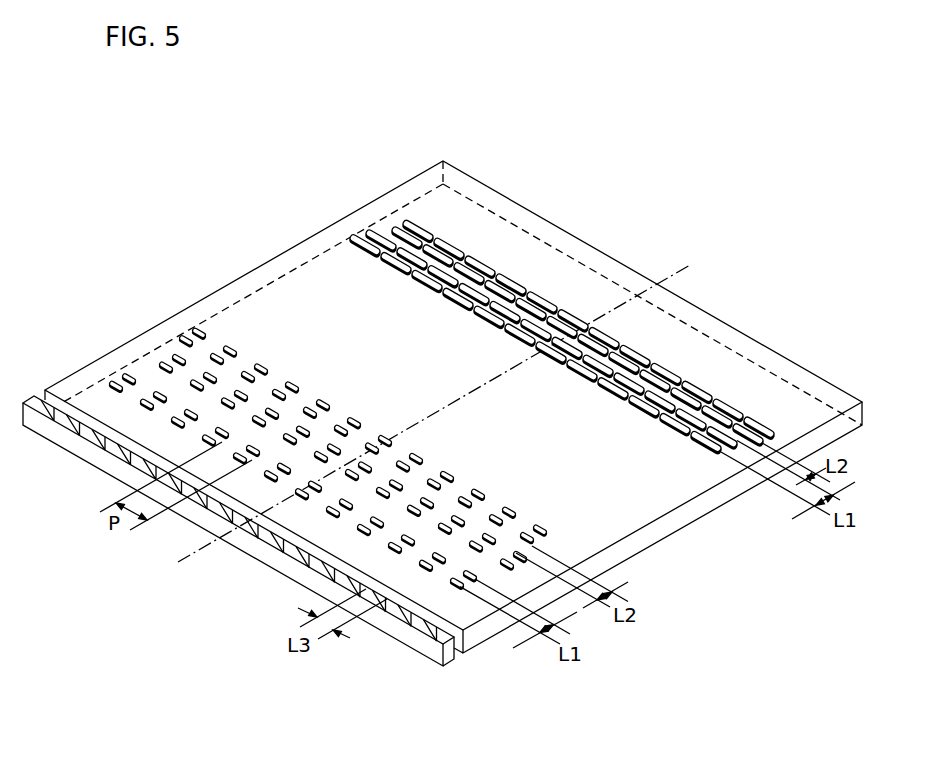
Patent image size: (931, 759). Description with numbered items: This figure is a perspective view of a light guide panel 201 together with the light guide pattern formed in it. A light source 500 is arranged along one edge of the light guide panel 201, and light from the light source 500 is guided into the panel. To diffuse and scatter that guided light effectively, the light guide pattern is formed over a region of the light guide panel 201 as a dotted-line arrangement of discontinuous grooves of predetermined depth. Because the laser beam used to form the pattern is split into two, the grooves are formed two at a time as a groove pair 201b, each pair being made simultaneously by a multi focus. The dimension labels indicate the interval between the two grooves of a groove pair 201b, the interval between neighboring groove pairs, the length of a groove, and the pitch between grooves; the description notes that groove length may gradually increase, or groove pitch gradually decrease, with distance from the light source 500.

The light guide panel 201 is at (272, 281).
The groove pair 201b is at (196, 330).
The light source 500 is at (451, 667).